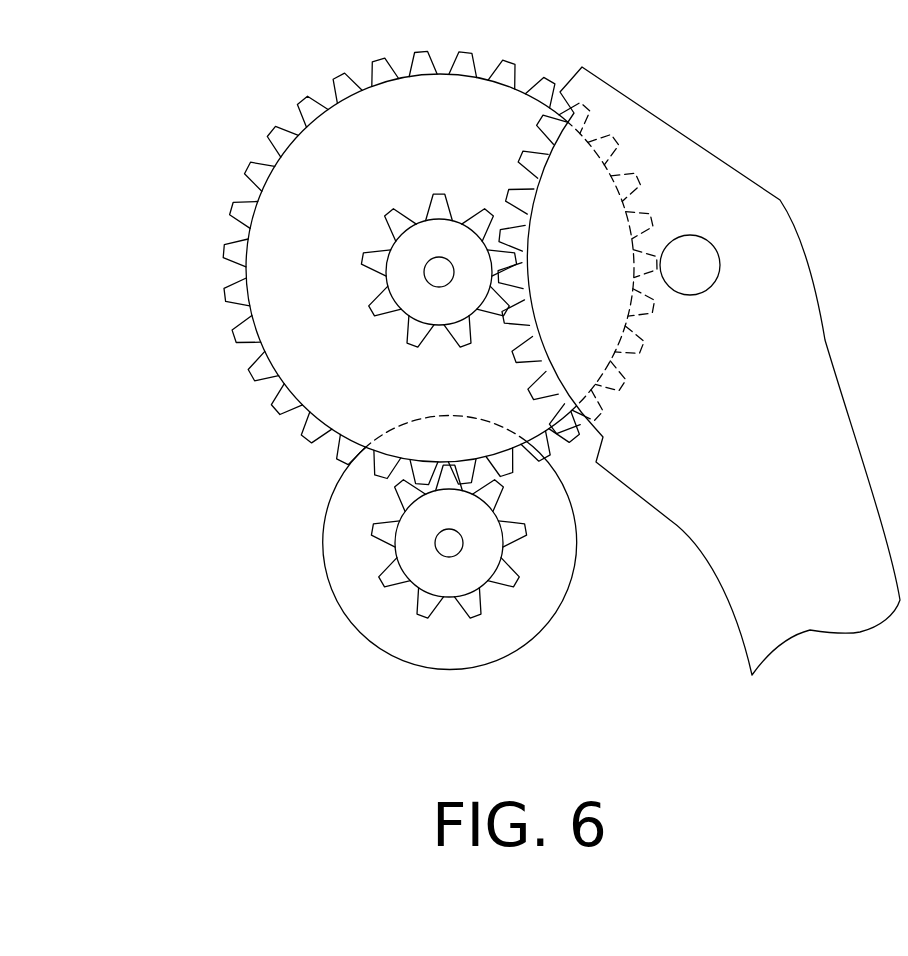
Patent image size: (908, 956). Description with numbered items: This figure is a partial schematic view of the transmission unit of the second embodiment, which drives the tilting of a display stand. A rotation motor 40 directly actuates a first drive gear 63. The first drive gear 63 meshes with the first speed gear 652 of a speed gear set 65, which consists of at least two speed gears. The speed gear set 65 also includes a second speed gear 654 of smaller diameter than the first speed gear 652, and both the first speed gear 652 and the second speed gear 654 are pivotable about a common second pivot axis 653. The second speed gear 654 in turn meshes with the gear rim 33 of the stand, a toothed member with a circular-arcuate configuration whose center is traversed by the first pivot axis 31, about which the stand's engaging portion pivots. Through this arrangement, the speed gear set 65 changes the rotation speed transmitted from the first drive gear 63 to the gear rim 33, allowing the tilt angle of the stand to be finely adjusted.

The speed gear set 65 is at (377, 267).
The first speed gear 652 is at (262, 323).
The second pivot axis 653 is at (439, 272).
The second speed gear 654 is at (327, 267).
The rotation motor 40 is at (359, 577).
The first drive gear 63 is at (438, 577).
The gear rim 33 is at (699, 371).
The first pivot axis 31 is at (690, 265).